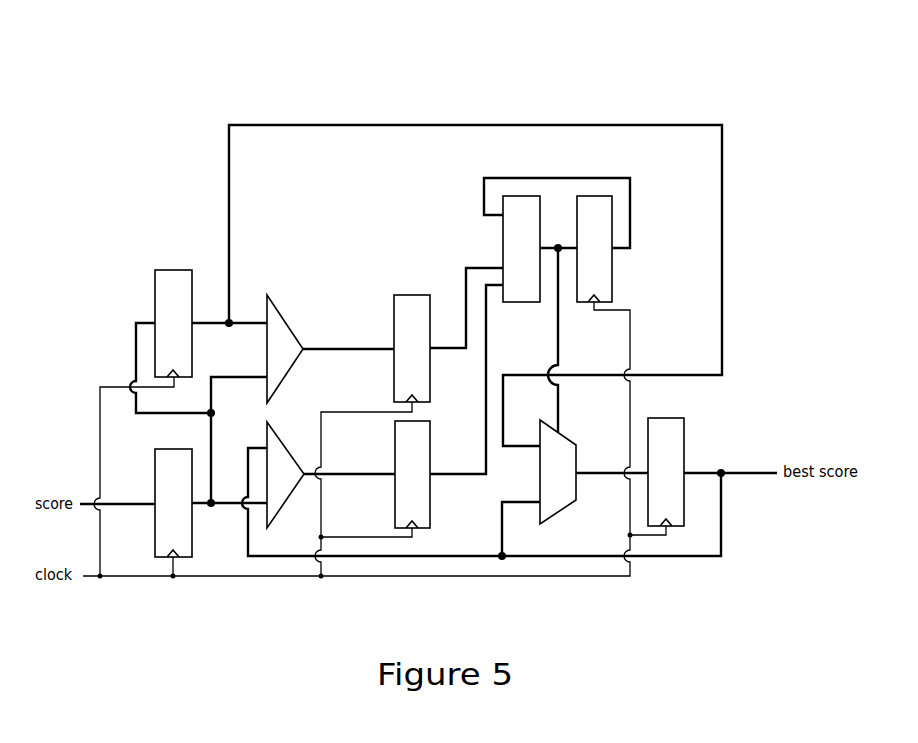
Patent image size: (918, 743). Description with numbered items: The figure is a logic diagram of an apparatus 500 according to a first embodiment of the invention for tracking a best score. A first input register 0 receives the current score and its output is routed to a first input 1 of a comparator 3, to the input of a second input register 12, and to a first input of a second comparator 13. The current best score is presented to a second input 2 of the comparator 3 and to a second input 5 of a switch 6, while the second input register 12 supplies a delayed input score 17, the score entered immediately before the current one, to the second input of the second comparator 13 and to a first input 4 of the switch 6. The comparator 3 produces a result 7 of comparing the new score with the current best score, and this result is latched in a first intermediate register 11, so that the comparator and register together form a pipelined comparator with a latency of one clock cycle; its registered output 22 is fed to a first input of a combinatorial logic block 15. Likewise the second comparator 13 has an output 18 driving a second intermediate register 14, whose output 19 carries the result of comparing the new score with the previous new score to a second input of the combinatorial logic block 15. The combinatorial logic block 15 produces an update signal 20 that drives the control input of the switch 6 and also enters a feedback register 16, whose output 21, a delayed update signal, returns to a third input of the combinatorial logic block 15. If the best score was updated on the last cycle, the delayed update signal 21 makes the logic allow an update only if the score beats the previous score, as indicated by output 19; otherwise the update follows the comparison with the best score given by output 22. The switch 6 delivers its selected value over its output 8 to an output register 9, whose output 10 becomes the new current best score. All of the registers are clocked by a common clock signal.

The apparatus 500 is at (777, 88).
The first input register 0 is at (173, 503).
The first input of comparator 1 is at (229, 496).
The second input of comparator 2 is at (483, 496).
The comparator 3 is at (285, 475).
The first input of switch 4 is at (475, 285).
The second input of switch 5 is at (521, 518).
The switch 6 is at (558, 472).
The result 7 is at (349, 467).
The multiplexer output 8 is at (612, 462).
The output register 9 is at (666, 472).
The output of output register 10 is at (730, 464).
The first intermediate register 11 is at (412, 474).
The second input register 12 is at (173, 323).
The second comparator 13 is at (285, 349).
The second intermediate register 14 is at (412, 348).
The combinatorial logic block 15 is at (521, 249).
The feedback register 16 is at (594, 249).
The delayed input score 17 is at (229, 312).
The output of second comparator 18 is at (348, 336).
The output of second intermediate register 19 is at (466, 308).
The update signal 20 is at (558, 328).
The delayed update signal 21 is at (572, 213).
The output of first intermediate register 22 is at (466, 379).